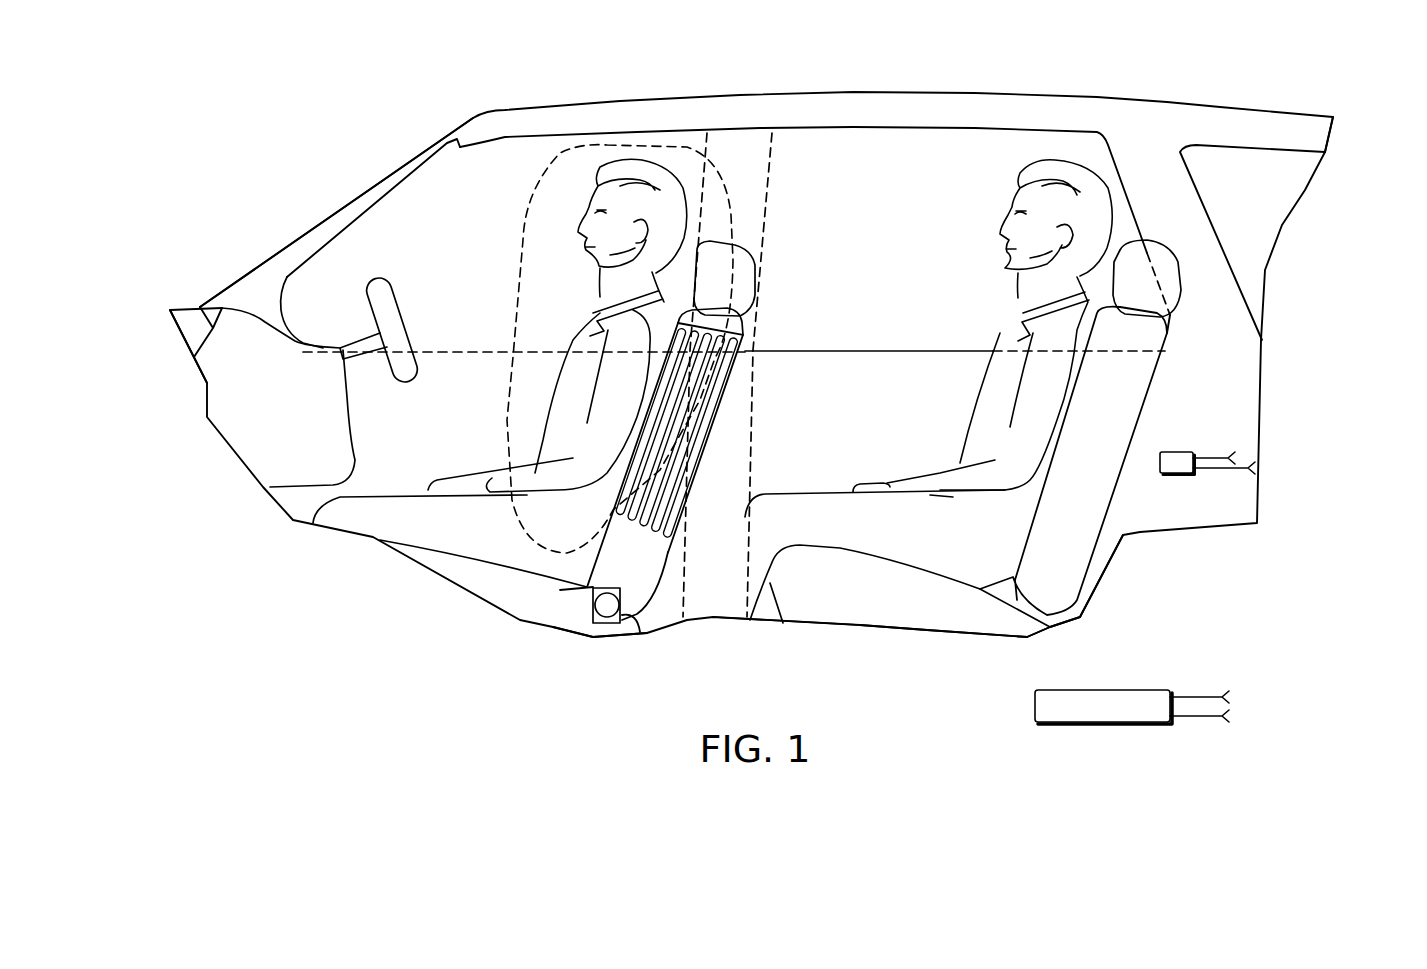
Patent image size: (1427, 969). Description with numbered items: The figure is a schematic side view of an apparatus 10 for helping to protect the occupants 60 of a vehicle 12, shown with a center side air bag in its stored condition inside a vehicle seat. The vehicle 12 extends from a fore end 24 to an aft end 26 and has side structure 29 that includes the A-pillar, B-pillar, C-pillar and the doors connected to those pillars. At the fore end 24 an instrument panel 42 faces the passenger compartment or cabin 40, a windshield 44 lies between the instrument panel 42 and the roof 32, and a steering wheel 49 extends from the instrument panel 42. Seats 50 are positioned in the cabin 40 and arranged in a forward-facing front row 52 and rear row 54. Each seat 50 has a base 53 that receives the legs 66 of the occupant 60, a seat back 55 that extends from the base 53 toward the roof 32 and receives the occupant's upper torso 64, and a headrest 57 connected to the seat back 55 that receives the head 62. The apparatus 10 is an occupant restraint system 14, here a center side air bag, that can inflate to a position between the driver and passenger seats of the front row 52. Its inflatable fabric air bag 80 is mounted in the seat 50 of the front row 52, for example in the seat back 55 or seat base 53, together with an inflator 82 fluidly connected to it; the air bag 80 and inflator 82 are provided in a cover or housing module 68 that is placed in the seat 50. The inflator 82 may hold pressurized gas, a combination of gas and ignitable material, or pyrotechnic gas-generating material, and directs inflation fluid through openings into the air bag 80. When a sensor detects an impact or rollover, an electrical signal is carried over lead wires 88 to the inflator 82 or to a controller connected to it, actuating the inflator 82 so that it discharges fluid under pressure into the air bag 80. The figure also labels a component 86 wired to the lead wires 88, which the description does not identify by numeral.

The apparatus 10 is at (468, 110).
The vehicle 12 is at (345, 190).
The occupant restraint system 14 is at (750, 348).
The fore end 24 is at (188, 273).
The aft end 26 is at (1346, 102).
The side structure 29 is at (1200, 262).
The roof 32 is at (977, 107).
The passenger compartment 40 is at (874, 170).
The instrument panel 42 is at (303, 337).
The windshield 44 is at (302, 233).
The steering wheel 49 is at (393, 313).
The seat 50 is at (557, 614).
The front row 52 is at (611, 655).
The seat base 53 is at (480, 580).
The rear row 54 is at (971, 656).
The seat back 55 is at (733, 370).
The headrest 57 is at (737, 260).
The occupant 60 is at (812, 275).
The head 62 is at (653, 172).
The upper torso 64 is at (550, 403).
The legs 66 is at (393, 505).
The housing module 68 is at (712, 473).
The air bag 80 is at (560, 148).
The inflator 82 is at (712, 442).
The sensor 86 is at (1178, 452).
The lead wires 88 is at (1213, 453).